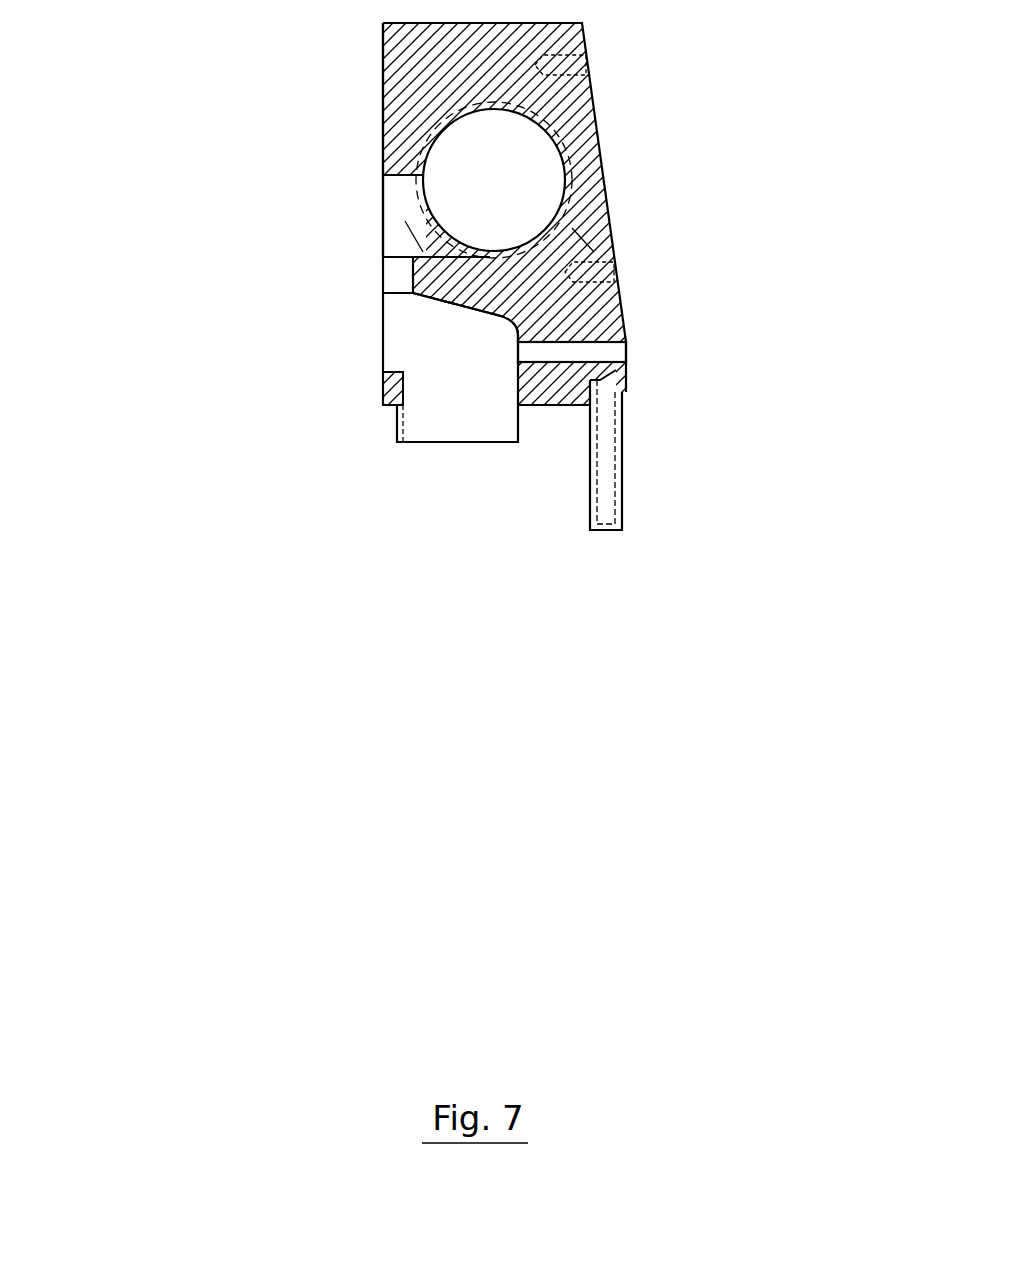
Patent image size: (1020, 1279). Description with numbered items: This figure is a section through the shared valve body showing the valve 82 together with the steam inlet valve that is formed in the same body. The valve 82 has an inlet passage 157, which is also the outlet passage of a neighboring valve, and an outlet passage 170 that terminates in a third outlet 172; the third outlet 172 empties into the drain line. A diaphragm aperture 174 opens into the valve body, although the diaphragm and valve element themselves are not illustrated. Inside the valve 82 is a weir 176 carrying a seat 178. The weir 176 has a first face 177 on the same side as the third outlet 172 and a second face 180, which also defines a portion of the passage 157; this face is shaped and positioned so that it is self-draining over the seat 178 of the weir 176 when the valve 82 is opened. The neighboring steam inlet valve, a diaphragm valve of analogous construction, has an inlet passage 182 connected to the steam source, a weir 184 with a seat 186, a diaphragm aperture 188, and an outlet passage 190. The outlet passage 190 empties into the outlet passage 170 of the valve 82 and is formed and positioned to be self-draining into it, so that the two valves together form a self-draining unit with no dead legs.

The valve 82 is at (215, 202).
The diaphragm aperture 174 is at (235, 140).
The inlet passage 157 is at (609, 157).
The second face 180 is at (239, 260).
The seat 178 is at (234, 315).
The first face 177 is at (255, 364).
The weir 176 is at (463, 456).
The outlet passage 170 is at (357, 492).
The third outlet 172 is at (322, 480).
The outlet passage 190 is at (521, 535).
The seat 186 is at (697, 339).
The diaphragm aperture 188 is at (572, 535).
The weir 184 is at (742, 479).
The inlet passage 182 is at (745, 521).